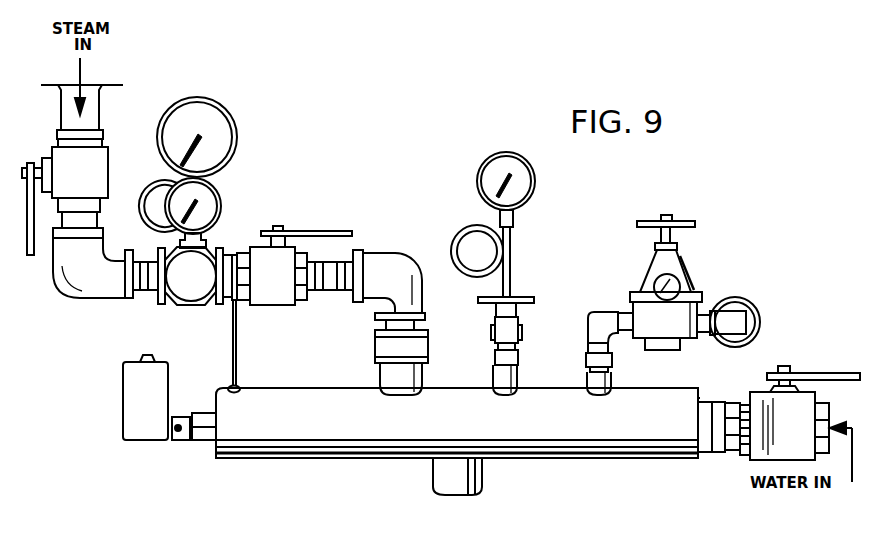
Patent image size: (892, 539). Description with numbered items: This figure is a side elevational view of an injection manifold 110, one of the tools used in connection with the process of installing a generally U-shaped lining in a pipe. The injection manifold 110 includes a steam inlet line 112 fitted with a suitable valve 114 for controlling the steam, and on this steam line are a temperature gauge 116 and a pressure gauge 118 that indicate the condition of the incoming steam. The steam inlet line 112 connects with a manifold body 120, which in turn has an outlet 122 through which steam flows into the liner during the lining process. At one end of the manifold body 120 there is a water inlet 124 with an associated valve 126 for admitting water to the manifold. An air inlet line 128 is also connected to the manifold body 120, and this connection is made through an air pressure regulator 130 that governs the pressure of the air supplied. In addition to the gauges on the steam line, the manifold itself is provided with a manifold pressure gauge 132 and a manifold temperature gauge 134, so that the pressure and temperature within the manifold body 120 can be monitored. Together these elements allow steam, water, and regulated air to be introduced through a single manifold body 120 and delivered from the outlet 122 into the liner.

The injection manifold 110 is at (358, 190).
The steam inlet line 112 is at (84, 298).
The valve 114 is at (60, 156).
The temperature gauge 116 is at (235, 136).
The pressure gauge 118 is at (199, 206).
The manifold body 120 is at (537, 461).
The outlet 122 is at (456, 494).
The water inlet 124 is at (749, 460).
The valve 126 is at (797, 372).
The air inlet line 128 is at (735, 298).
The air pressure regulator 130 is at (633, 284).
The manifold pressure gauge 132 is at (523, 298).
The manifold temperature gauge 134 is at (487, 165).